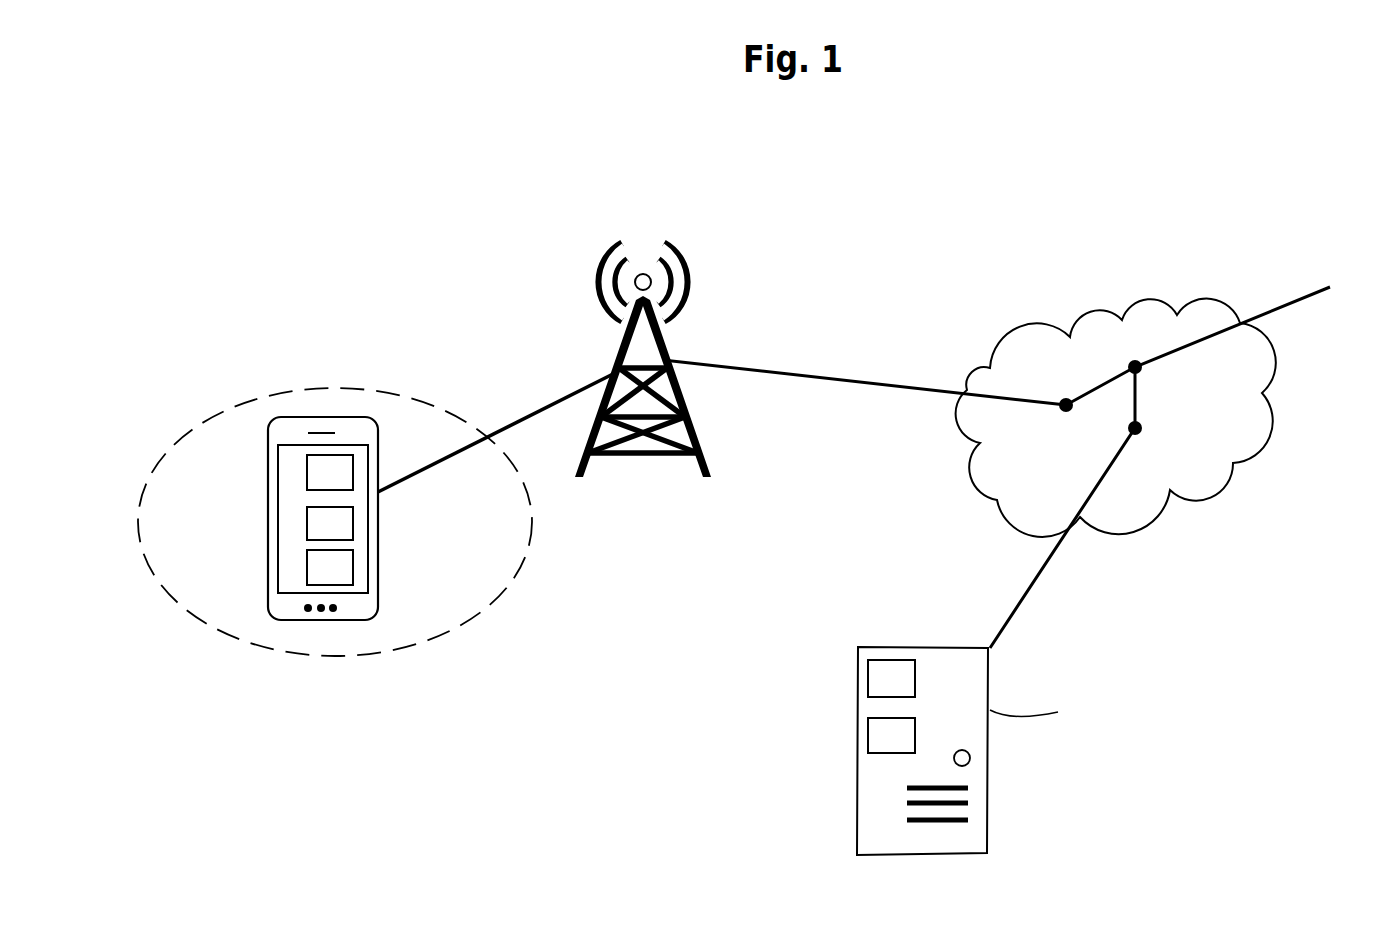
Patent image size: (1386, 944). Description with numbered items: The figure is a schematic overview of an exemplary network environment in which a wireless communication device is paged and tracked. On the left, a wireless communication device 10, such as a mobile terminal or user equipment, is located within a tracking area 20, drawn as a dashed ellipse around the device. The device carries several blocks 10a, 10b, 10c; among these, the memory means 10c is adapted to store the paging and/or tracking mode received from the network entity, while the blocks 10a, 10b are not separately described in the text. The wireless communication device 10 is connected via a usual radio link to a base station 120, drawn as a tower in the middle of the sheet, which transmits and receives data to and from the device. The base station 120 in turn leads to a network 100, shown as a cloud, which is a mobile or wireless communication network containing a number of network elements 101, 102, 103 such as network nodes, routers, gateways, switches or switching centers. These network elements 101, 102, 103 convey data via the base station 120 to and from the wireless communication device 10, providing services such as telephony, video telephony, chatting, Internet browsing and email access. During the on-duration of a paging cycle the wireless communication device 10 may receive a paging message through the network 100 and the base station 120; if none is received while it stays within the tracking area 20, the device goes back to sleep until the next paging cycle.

The wireless communication device 10 is at (362, 575).
The application 10a is at (355, 478).
The application 10b is at (355, 525).
The memory means 10c is at (355, 568).
The tracking area 20 is at (232, 408).
The network 100 is at (1205, 305).
The network element 101 is at (1063, 413).
The network element 102 is at (1143, 427).
The network element 103 is at (1128, 363).
The base station 120 is at (693, 440).